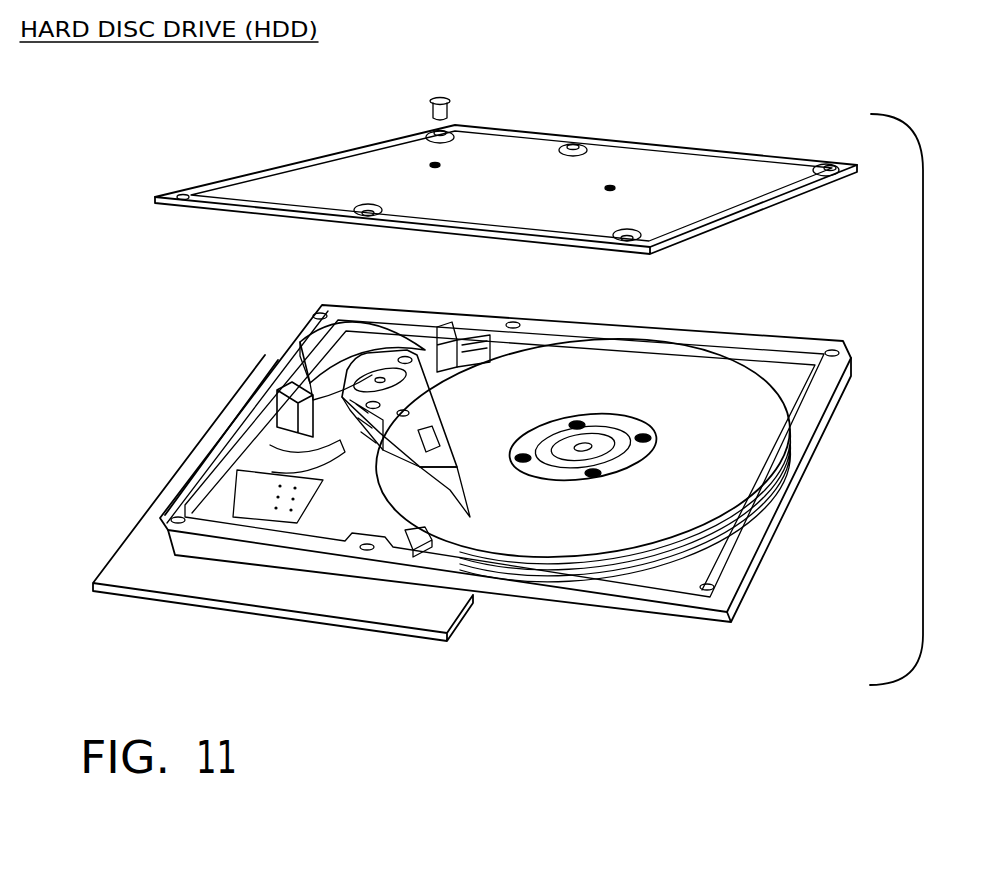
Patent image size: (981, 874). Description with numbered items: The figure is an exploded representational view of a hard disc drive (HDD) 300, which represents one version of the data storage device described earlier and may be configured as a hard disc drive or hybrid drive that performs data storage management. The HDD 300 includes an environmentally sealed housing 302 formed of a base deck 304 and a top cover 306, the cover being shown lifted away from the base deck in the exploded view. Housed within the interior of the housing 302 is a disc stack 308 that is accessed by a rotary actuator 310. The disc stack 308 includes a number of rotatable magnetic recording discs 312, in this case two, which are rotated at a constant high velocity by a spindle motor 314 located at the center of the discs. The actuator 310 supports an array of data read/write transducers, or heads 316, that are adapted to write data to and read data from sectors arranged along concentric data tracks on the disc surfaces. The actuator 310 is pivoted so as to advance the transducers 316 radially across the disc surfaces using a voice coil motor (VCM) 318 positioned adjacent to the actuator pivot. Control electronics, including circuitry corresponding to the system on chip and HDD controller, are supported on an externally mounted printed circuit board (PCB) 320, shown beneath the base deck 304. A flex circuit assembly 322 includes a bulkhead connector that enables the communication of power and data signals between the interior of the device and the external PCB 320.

The hard disc drive (HDD) 300 is at (170, 120).
The environmentally sealed housing 302 is at (200, 314).
The base deck 304 is at (778, 508).
The top cover 306 is at (608, 160).
The disc stack 308 is at (590, 368).
The rotary actuator 310 is at (440, 447).
The rotatable magnetic recording discs 312 is at (650, 582).
The spindle motor 314 is at (596, 443).
The data read/write transducers (heads) 316 is at (478, 512).
The voice coil motor (VCM) 318 is at (377, 318).
The printed circuit board (PCB) 320 is at (243, 608).
The flex circuit assembly 322 is at (280, 452).